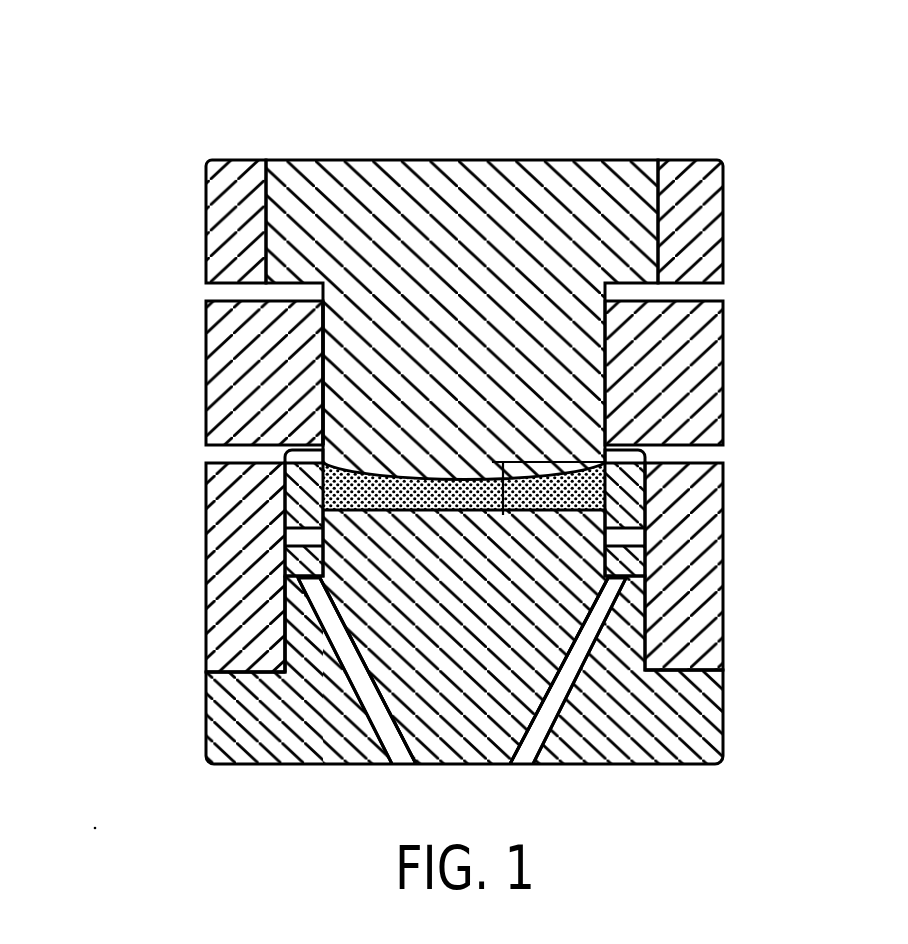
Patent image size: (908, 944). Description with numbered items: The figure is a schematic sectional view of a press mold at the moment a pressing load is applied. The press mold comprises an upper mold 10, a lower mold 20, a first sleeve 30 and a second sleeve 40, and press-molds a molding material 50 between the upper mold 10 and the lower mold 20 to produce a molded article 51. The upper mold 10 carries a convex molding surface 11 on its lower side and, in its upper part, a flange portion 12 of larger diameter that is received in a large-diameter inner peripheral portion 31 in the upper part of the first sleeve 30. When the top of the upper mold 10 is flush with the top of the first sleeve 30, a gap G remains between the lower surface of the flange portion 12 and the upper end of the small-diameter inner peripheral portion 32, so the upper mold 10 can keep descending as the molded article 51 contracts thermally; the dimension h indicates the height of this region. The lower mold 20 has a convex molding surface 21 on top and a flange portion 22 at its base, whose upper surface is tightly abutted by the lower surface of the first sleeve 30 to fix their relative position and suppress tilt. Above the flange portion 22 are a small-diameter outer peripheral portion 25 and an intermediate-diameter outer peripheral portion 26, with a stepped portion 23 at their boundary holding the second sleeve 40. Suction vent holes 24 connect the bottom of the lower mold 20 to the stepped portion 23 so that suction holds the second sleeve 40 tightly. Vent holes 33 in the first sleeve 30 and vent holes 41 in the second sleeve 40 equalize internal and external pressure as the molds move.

The upper mold 10 is at (482, 215).
The molding surface 11 is at (603, 505).
The flange portion 12 is at (624, 230).
The lower mold 20 is at (627, 700).
The molding surface 21 is at (339, 448).
The flange portion 22 is at (723, 701).
The stepped portion 23 is at (610, 590).
The suction vent holes 24 is at (606, 627).
The small-diameter outer peripheral portion 25 is at (387, 562).
The intermediate-diameter outer peripheral portion 26 is at (309, 641).
The first sleeve 30 is at (723, 378).
The large-diameter inner peripheral portion 31 is at (267, 230).
The small-diameter inner peripheral portion 32 is at (604, 350).
The vent holes 33 is at (692, 288).
The second sleeve 40 is at (640, 527).
The vent holes 41 is at (292, 531).
The molding material 50 is at (326, 394).
The molded article 51 is at (185, 373).
The gap G is at (298, 285).
The sag height h is at (486, 486).